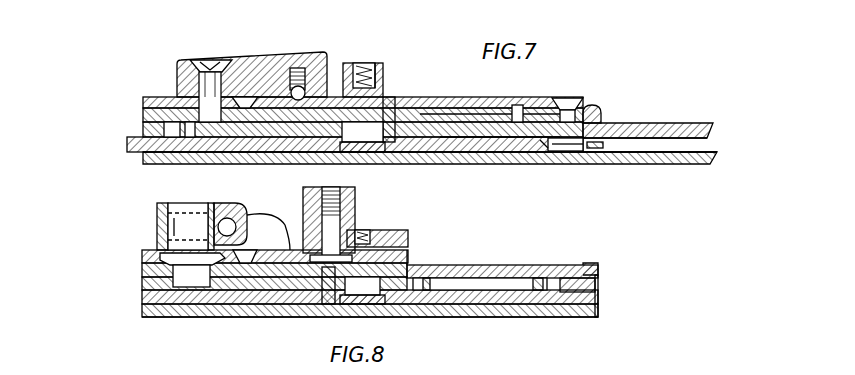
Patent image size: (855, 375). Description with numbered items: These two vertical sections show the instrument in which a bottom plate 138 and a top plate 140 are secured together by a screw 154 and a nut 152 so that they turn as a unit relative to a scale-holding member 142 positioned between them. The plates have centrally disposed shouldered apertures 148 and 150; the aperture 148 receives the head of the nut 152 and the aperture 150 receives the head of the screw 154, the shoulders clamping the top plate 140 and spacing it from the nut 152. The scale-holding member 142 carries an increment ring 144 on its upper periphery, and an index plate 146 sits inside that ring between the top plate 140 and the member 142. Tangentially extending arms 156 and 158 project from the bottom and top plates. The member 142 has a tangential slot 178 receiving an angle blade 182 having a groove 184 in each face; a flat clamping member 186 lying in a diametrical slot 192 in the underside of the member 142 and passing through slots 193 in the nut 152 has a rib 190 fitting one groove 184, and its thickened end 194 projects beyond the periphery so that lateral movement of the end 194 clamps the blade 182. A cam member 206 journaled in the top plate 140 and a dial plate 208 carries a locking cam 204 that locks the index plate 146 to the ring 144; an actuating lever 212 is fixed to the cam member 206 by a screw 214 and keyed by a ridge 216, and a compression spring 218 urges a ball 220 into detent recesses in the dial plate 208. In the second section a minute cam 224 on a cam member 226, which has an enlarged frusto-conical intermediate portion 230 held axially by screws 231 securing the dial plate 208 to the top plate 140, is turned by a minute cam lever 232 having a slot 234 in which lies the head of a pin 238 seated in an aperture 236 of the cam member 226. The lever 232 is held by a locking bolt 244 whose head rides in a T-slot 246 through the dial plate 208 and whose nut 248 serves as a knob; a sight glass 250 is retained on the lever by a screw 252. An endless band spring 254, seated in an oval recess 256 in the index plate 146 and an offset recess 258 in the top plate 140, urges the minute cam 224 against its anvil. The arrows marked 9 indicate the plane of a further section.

In FIG. 7, the section line 9- 9 is at (134, 118).
In FIG. 7, the bottom plate 138 is at (458, 158).
In FIG. 8, the bottom plate 138 is at (492, 310).
In FIG. 7, the top plate 140 is at (347, 66).
In FIG. 8, the top plate 140 is at (592, 266).
In FIG. 7, the scale-holding member 142 is at (505, 150).
In FIG. 8, the scale-holding member 142 is at (446, 296).
In FIG. 7, the increment ring 144 is at (598, 120).
In FIG. 8, the increment ring 144 is at (586, 283).
In FIG. 7, the index plate 146 is at (514, 105).
In FIG. 8, the index plate 146 is at (256, 285).
In FIG. 8, the shouldered aperture 148 is at (312, 300).
In FIG. 8, the shouldered aperture 150 is at (405, 265).
In FIG. 7, the nut 152 is at (378, 158).
In FIG. 8, the nut 152 is at (370, 306).
In FIG. 7, the screw 154 is at (388, 100).
In FIG. 8, the screw 154 is at (362, 286).
In FIG. 7, the arm 156 is at (704, 162).
In FIG. 7, the arm 158 is at (640, 130).
In FIG. 7, the tangentially extending slot 178 is at (563, 100).
In FIG. 7, the angle blade 182 is at (578, 152).
In FIG. 7, the groove 184 is at (604, 145).
In FIG. 7, the clamping member 186 is at (490, 140).
In FIG. 7, the rib 190 is at (560, 152).
In FIG. 7, the slot 192 is at (462, 100).
In FIG. 7, the slots 193 is at (362, 132).
In FIG. 7, the end of clamping member 194 is at (130, 146).
In FIG. 7, the locking cam 204 is at (192, 128).
In FIG. 7, the cam member 206 is at (180, 82).
In FIG. 7, the dial plate 208 is at (155, 100).
In FIG. 8, the dial plate 208 is at (258, 250).
In FIG. 7, the actuating lever 212 is at (268, 60).
In FIG. 7, the screw 214 is at (206, 66).
In FIG. 7, the ridge 216 is at (198, 65).
In FIG. 7, the compression spring 218 is at (302, 70).
In FIG. 7, the ball 220 is at (305, 90).
In FIG. 8, the minute cam 224 is at (185, 292).
In FIG. 8, the minute cam member 226 is at (157, 240).
In FIG. 8, the intermediate portion 230 is at (165, 262).
In FIG. 8, the screws 231 is at (186, 227).
In FIG. 7, the minute cam lever 232 is at (388, 97).
In FIG. 8, the minute cam lever 232 is at (246, 248).
In FIG. 8, the slot 234 is at (265, 228).
In FIG. 8, the aperture 236 is at (170, 216).
In FIG. 8, the pin 238 is at (230, 212).
In FIG. 8, the locking bolt 244 is at (330, 192).
In FIG. 8, the T-slot 246 is at (302, 242).
In FIG. 8, the nut 248 is at (352, 212).
In FIG. 7, the sight glass 250 is at (385, 78).
In FIG. 8, the sight glass 250 is at (408, 238).
In FIG. 7, the screw 252 is at (366, 66).
In FIG. 8, the screw 252 is at (366, 233).
In FIG. 8, the spring 254 is at (500, 282).
In FIG. 8, the oval recess 256 is at (540, 282).
In FIG. 8, the recess 258 is at (430, 282).